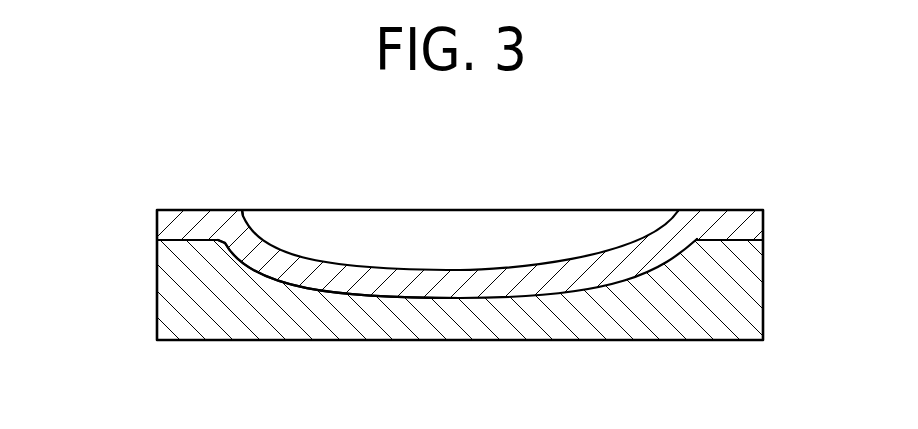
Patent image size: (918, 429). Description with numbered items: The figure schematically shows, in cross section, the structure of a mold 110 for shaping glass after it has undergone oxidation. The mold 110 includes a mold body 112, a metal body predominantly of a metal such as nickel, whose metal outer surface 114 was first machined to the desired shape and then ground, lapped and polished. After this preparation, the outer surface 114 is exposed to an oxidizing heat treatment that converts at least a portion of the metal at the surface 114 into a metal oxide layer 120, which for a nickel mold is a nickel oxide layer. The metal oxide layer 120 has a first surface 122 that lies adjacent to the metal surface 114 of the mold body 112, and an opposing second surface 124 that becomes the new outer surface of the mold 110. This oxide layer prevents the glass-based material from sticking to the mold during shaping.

The mold 110 is at (139, 217).
The mold body 112 is at (740, 291).
The outer surface 114 is at (260, 266).
The metal oxide layer 120 is at (697, 223).
The first surface 122 is at (588, 293).
The second surface 124 is at (462, 268).